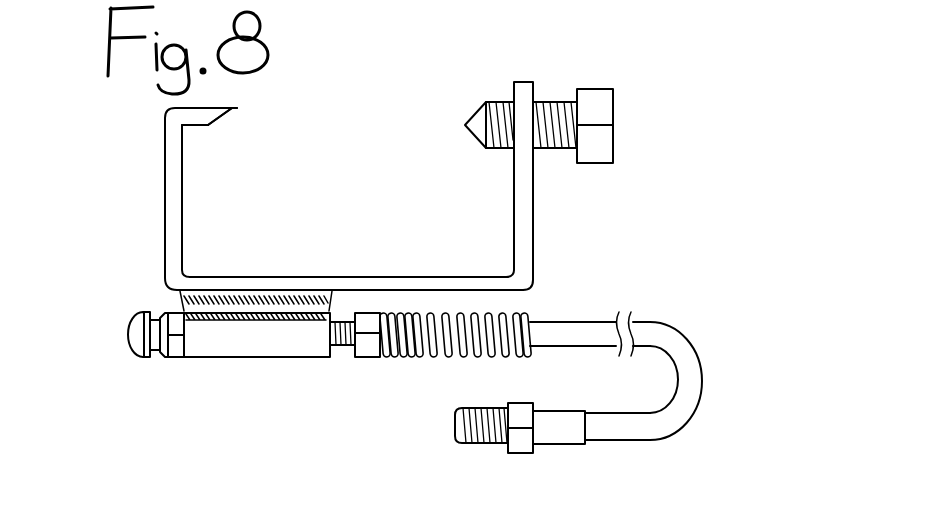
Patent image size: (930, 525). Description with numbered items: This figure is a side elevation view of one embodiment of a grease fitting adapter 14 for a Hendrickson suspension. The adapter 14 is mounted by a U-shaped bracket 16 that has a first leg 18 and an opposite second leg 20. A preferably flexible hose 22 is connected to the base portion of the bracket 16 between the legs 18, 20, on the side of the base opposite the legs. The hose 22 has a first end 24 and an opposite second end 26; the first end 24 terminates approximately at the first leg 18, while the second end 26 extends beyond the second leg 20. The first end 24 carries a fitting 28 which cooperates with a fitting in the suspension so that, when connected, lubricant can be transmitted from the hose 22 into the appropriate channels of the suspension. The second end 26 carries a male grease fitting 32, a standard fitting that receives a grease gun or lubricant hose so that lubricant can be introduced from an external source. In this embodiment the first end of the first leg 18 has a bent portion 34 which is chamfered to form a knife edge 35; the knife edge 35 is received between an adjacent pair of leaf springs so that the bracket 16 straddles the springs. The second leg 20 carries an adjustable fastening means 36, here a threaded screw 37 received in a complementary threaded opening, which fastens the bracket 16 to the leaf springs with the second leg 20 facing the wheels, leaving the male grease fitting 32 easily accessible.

The grease fitting adapter 14 is at (351, 151).
The U-shaped bracket 16 is at (313, 265).
The first leg 18 is at (172, 209).
The second leg 20 is at (525, 213).
The hose 22 is at (560, 377).
The first end 24 is at (617, 432).
The second end 26 is at (553, 325).
The fitting 28 is at (455, 425).
The male grease fitting 32 is at (128, 335).
The bent portion 34 is at (192, 127).
The knife edge 35 is at (237, 108).
The adjustable fastening means 36 is at (612, 107).
The threaded screw 37 is at (553, 108).